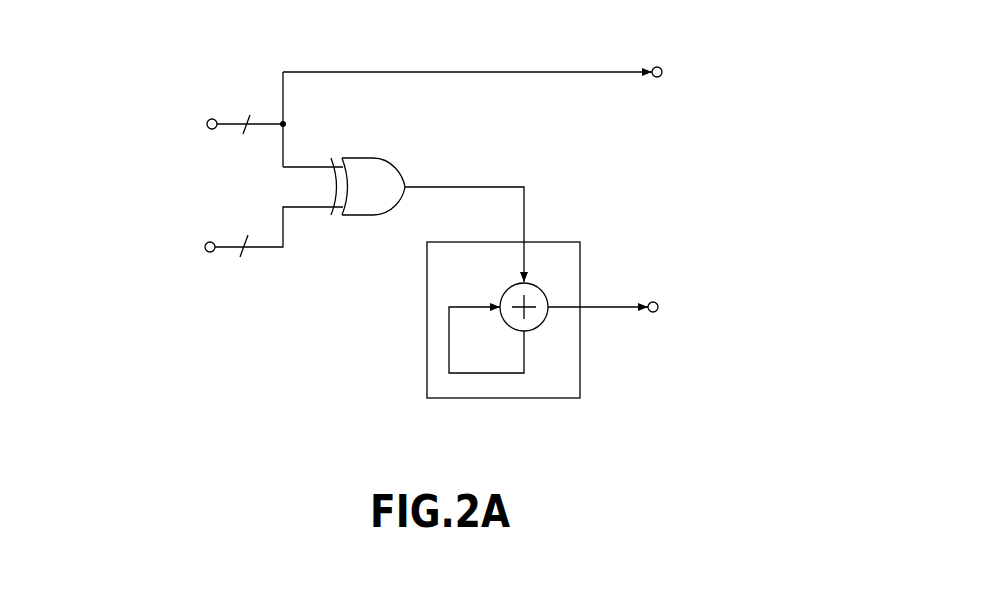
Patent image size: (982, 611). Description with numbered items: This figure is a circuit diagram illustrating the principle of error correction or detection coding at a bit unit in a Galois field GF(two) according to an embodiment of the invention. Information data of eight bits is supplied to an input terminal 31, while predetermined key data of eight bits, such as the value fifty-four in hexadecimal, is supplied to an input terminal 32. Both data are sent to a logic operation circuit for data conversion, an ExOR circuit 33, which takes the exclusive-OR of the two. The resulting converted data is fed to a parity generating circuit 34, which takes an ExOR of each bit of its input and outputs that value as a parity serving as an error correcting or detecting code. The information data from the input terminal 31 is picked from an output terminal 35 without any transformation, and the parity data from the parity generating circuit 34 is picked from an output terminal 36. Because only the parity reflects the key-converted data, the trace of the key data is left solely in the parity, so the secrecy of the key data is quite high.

The input terminal 31 is at (213, 119).
The input terminal 32 is at (210, 252).
The ExOR circuit 33 is at (362, 155).
The parity generating circuit 34 is at (503, 400).
The output terminal 35 is at (657, 67).
The output terminal 36 is at (652, 312).